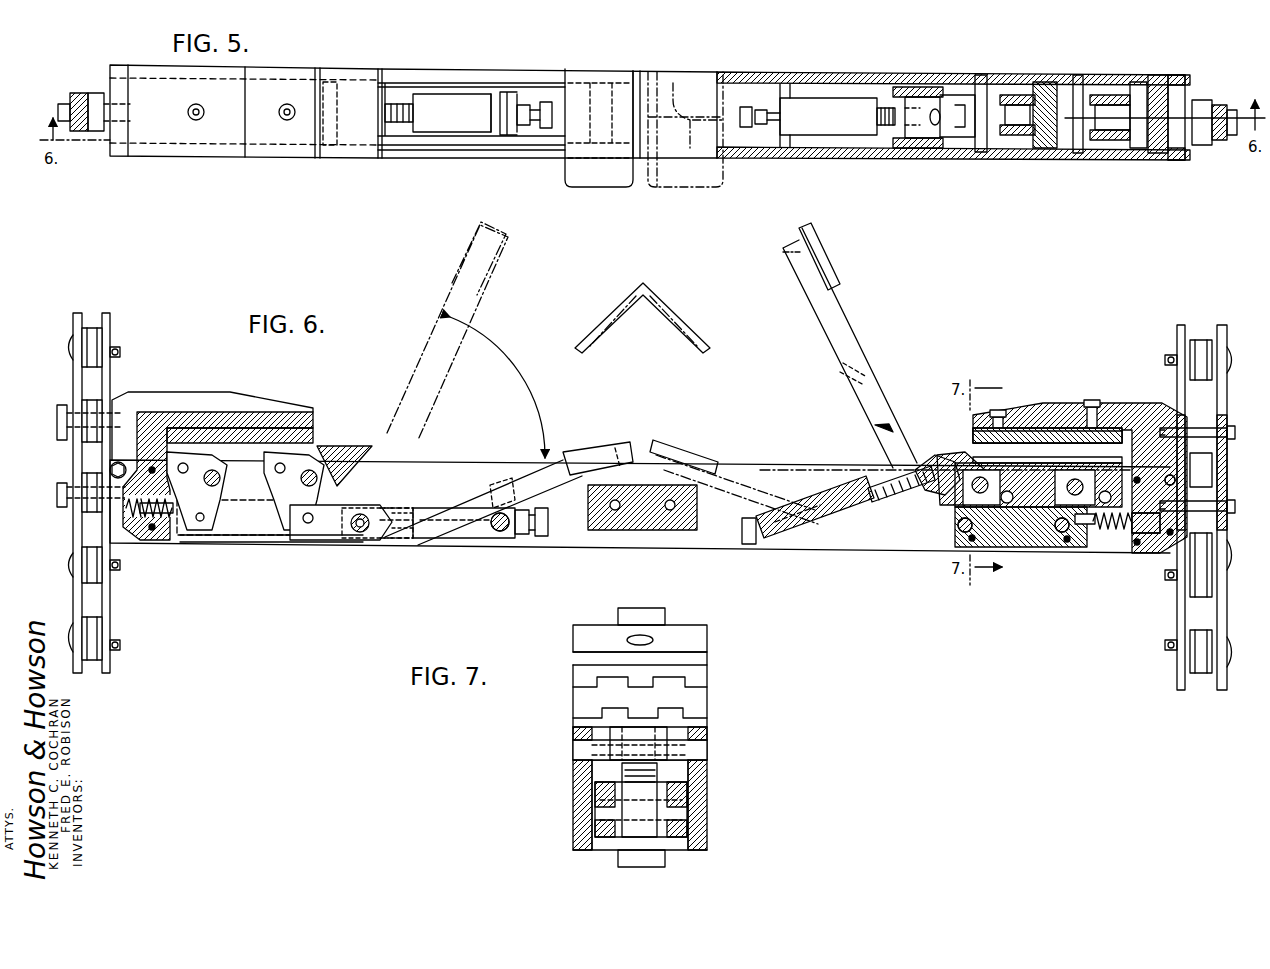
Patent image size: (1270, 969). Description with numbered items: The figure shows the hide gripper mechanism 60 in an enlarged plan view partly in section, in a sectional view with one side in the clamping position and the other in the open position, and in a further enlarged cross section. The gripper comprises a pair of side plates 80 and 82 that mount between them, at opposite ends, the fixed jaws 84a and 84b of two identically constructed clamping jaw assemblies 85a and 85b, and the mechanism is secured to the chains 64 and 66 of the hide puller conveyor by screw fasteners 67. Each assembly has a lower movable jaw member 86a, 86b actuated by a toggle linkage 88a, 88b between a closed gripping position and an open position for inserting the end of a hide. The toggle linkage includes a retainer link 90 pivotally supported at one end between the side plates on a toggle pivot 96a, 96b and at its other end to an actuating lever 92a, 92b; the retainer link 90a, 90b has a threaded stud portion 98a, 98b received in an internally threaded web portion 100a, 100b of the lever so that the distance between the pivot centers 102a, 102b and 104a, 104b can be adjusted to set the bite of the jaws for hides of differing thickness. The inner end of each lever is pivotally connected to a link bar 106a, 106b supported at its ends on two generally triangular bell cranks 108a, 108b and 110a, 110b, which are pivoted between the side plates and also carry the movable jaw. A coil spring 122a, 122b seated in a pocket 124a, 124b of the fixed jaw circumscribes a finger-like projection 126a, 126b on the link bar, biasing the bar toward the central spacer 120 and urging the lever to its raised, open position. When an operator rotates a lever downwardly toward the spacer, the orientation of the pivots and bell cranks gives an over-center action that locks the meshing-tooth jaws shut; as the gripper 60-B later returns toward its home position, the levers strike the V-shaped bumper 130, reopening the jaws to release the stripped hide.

In FIG. 5, the gripper mechanism 60 is at (380, 68).
In FIG. 6, the gripper mechanism 60 is at (752, 466).
In FIG. 7, the gripper mechanism 60 is at (575, 636).
In FIG. 5, the gripper 60-B is at (378, 158).
In FIG. 6, the gripper 60-B is at (602, 548).
In FIG. 7, the gripper 60-B is at (580, 670).
In FIG. 5, the chain 64 is at (80, 93).
In FIG. 6, the chain 64 is at (112, 342).
In FIG. 5, the chain 66 is at (1215, 100).
In FIG. 6, the chain 66 is at (1178, 333).
In FIG. 5, the screw fastener 67 is at (58, 108).
In FIG. 6, the screw fastener 67 is at (57, 490).
In FIG. 7, the screw fastener 67 is at (665, 614).
In FIG. 5, the side plate 80 is at (722, 80).
In FIG. 6, the side plate 80 is at (852, 550).
In FIG. 7, the side plate 80 is at (573, 780).
In FIG. 5, the side plate 82 is at (742, 159).
In FIG. 7, the side plate 82 is at (707, 788).
In FIG. 5, the fixed jaw 84a is at (270, 158).
In FIG. 6, the fixed jaw 84a is at (163, 400).
In FIG. 5, the fixed jaw 84b is at (1160, 82).
In FIG. 6, the fixed jaw 84b is at (1152, 410).
In FIG. 7, the fixed jaw 84b is at (700, 641).
In FIG. 6, the clamping jaw assembly 85a is at (237, 535).
In FIG. 6, the clamping jaw assembly 85b is at (1068, 548).
In FIG. 7, the clamping jaw assembly 85b is at (685, 790).
In FIG. 6, the lower movable jaw member 86a is at (315, 437).
In FIG. 5, the lower movable jaw member 86b is at (1043, 150).
In FIG. 6, the lower movable jaw member 86b is at (975, 440).
In FIG. 7, the lower movable jaw member 86b is at (700, 722).
In FIG. 5, the toggle linkage 88a is at (525, 88).
In FIG. 6, the toggle linkage 88a is at (442, 505).
In FIG. 6, the toggle linkage 88b is at (873, 393).
In FIG. 7, the toggle linkage 88b is at (595, 830).
In FIG. 5, the retainer link 90 is at (468, 94).
In FIG. 6, the retainer link 90 is at (470, 538).
In FIG. 5, the retainer link 90a is at (452, 113).
In FIG. 6, the retainer link 90a is at (435, 538).
In FIG. 5, the retainer link 90b is at (828, 116).
In FIG. 6, the retainer link 90b is at (815, 540).
In FIG. 5, the actuating lever 92a is at (560, 136).
In FIG. 6, the actuating lever 92a is at (510, 487).
In FIG. 5, the actuating lever 92b is at (900, 87).
In FIG. 6, the actuating lever 92b is at (842, 312).
In FIG. 5, the toggle pivot 96a is at (490, 136).
In FIG. 6, the toggle pivot 96a is at (503, 535).
In FIG. 5, the toggle pivot 96b is at (800, 140).
In FIG. 5, the threaded stud portion 98a is at (405, 104).
In FIG. 6, the threaded stud portion 98a is at (387, 530).
In FIG. 5, the threaded stud portion 98b is at (890, 130).
In FIG. 6, the threaded stud portion 98b is at (888, 502).
In FIG. 6, the internally threaded web portion 100a is at (345, 512).
In FIG. 5, the internally threaded web portion 100b is at (930, 138).
In FIG. 6, the internally threaded web portion 100b is at (917, 466).
In FIG. 6, the pivot center 102a is at (332, 527).
In FIG. 5, the pivot center 102b is at (920, 75).
In FIG. 6, the pivot center 104a is at (497, 532).
In FIG. 5, the pivot center 104b is at (790, 95).
In FIG. 6, the link bar 106a is at (272, 542).
In FIG. 6, the link bar 106b is at (1020, 548).
In FIG. 7, the link bar 106b is at (690, 832).
In FIG. 6, the bell crank 108a is at (220, 500).
In FIG. 5, the bell crank 108b is at (1095, 100).
In FIG. 6, the bell crank 108b is at (1085, 470).
In FIG. 6, the bell crank 110a is at (222, 470).
In FIG. 5, the bell crank 110b is at (1000, 98).
In FIG. 6, the bell crank 110b is at (952, 507).
In FIG. 7, the bell crank 110b is at (615, 737).
In FIG. 5, the spacer 120 is at (700, 100).
In FIG. 6, the spacer 120 is at (636, 530).
In FIG. 6, the coil spring 122a is at (142, 540).
In FIG. 6, the coil spring 122b is at (1125, 530).
In FIG. 6, the pocket 124a is at (128, 545).
In FIG. 6, the pocket 124b is at (1150, 535).
In FIG. 6, the finger-like projection 126a is at (135, 507).
In FIG. 6, the finger-like projection 126b is at (1110, 532).
In FIG. 6, the V-shaped bumper 130 is at (608, 312).